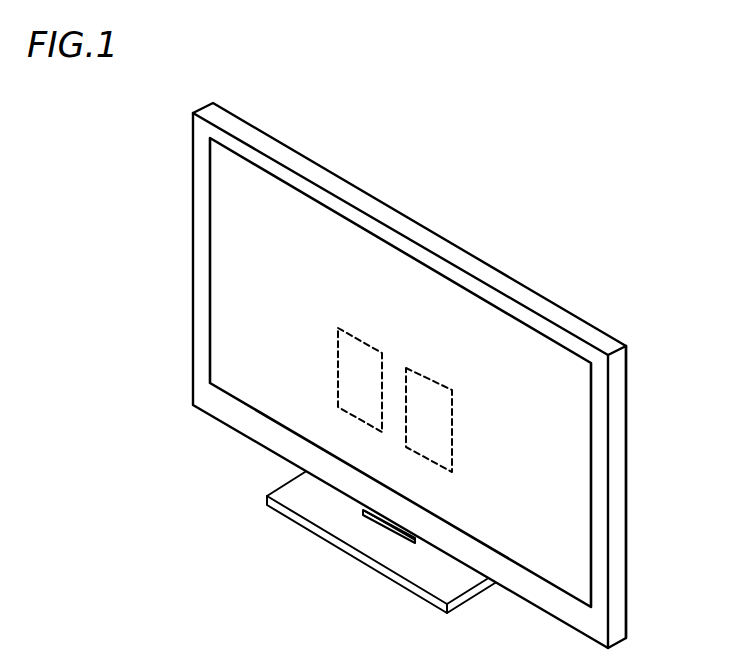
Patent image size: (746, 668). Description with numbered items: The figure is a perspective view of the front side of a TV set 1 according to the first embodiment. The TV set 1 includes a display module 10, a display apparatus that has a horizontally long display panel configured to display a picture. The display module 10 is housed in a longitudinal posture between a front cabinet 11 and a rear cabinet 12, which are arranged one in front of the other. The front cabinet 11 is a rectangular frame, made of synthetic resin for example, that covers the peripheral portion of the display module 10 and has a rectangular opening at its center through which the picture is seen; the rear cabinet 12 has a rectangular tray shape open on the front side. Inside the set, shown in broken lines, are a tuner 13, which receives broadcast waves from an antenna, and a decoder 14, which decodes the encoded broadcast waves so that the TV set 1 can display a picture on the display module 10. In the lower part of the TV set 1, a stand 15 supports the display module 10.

The TV set 1 is at (705, 95).
The display module 10 is at (562, 462).
The front cabinet 11 is at (598, 535).
The rear cabinet 12 is at (547, 300).
The tuner 13 is at (362, 355).
The decoder 14 is at (430, 395).
The stand 15 is at (310, 508).